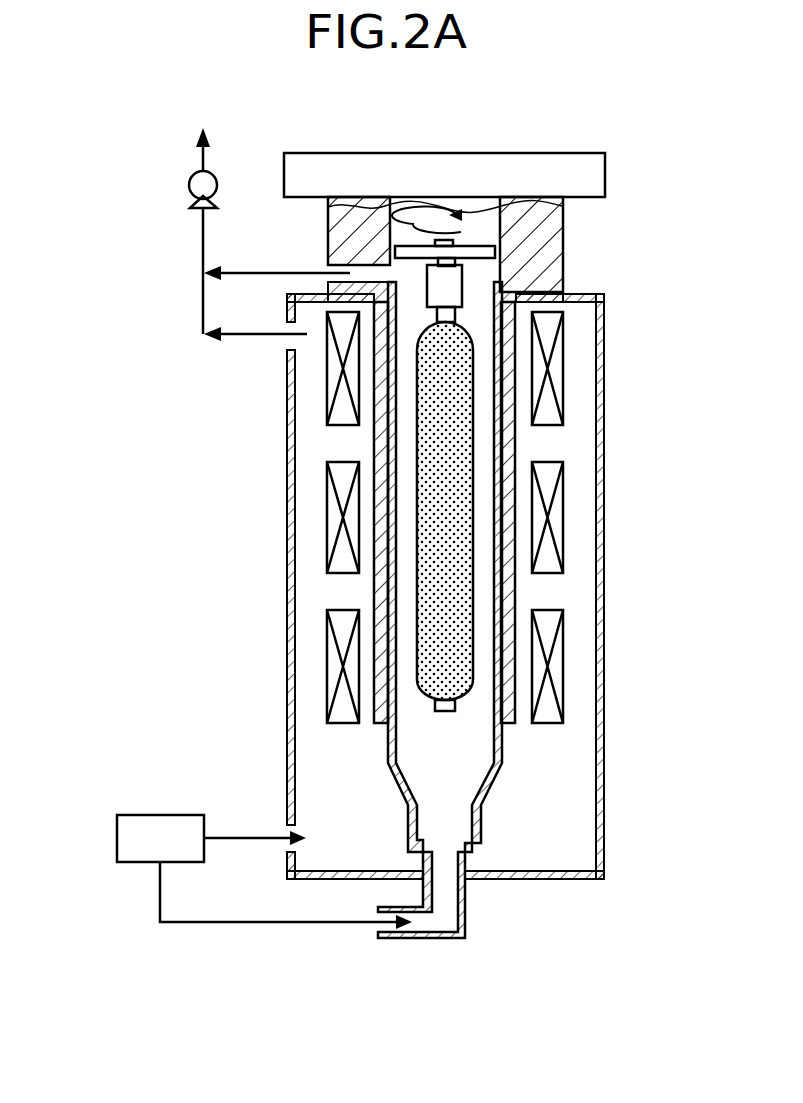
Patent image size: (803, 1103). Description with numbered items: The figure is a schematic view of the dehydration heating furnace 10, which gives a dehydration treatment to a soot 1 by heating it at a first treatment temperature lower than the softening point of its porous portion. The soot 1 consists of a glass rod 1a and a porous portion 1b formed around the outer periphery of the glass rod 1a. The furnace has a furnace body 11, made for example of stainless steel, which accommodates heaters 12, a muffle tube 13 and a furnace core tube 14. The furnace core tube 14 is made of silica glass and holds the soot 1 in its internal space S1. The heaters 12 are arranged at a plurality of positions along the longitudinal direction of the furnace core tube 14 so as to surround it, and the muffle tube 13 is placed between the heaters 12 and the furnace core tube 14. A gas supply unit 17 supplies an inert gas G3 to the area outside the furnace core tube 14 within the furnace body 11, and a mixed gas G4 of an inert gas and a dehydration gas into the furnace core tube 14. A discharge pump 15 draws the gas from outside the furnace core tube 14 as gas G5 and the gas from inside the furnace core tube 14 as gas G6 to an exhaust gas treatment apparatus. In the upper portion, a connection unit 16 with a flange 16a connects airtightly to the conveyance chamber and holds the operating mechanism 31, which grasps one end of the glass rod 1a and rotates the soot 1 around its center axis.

The dehydration heating furnace 10 is at (650, 142).
The connection unit 16 is at (577, 150).
The flange 16a is at (605, 175).
The operating mechanism 31 is at (462, 273).
The soot 1 is at (680, 267).
The glass rod 1a is at (455, 315).
The porous portion 1b is at (473, 356).
The furnace body 11 is at (604, 405).
The heaters 12 is at (563, 517).
The muffle tube 13 is at (516, 590).
The furnace core tube 14 is at (388, 763).
The internal space S1 is at (470, 766).
The discharge pump 15 is at (188, 185).
The gas supply unit 17 is at (117, 838).
The gas G3 is at (255, 853).
The gas G4 is at (286, 911).
The gas G5 is at (255, 350).
The gas G6 is at (277, 288).